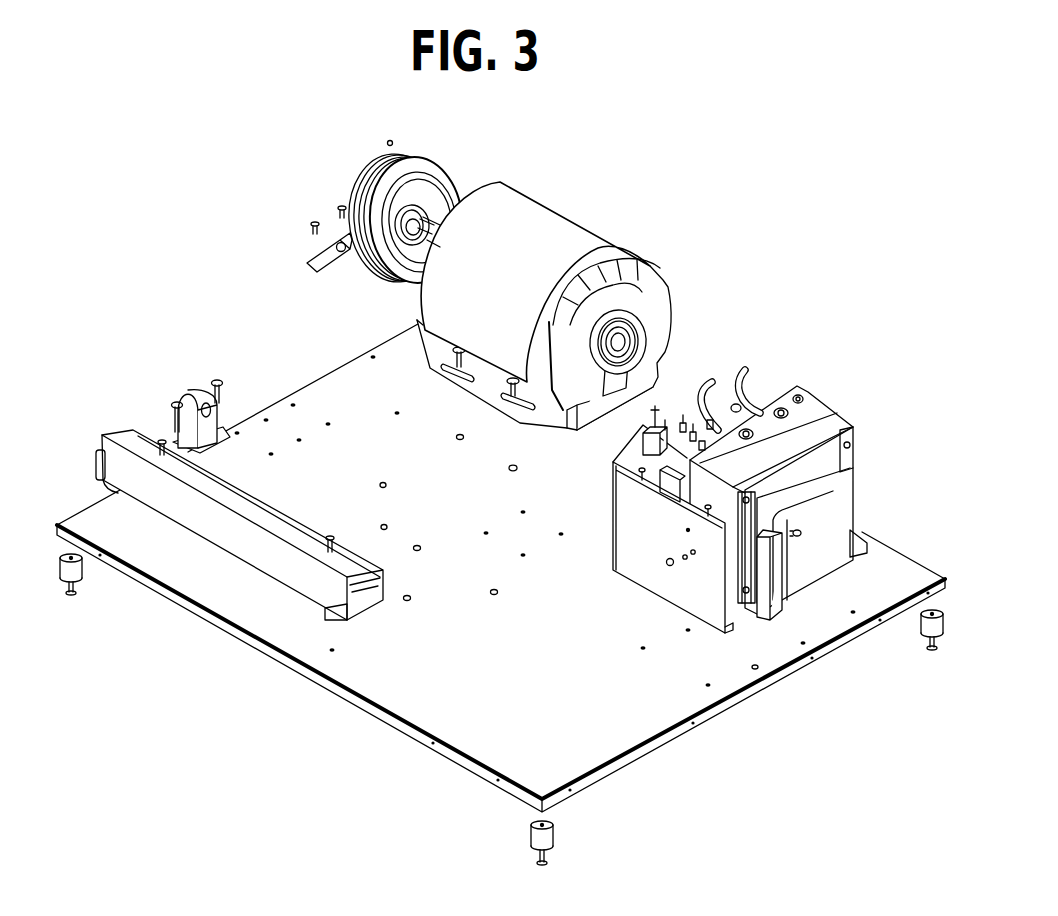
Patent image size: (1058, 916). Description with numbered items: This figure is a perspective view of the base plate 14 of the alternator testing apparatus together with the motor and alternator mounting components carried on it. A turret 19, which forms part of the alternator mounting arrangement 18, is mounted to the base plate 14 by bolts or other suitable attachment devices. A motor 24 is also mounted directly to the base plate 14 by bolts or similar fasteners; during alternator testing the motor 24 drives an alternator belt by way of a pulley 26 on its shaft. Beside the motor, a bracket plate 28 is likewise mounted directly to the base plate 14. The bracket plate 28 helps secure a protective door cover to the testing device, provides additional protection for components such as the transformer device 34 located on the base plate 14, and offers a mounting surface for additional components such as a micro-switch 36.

The base plate 14 is at (540, 683).
The alternator mounting arrangement 18 is at (164, 402).
The turret 19 is at (193, 399).
The motor 24 is at (515, 263).
The pulley 26 is at (405, 155).
The bracket plate 28 is at (703, 618).
The transformer device 34 is at (815, 418).
The micro-switch 36 is at (654, 404).